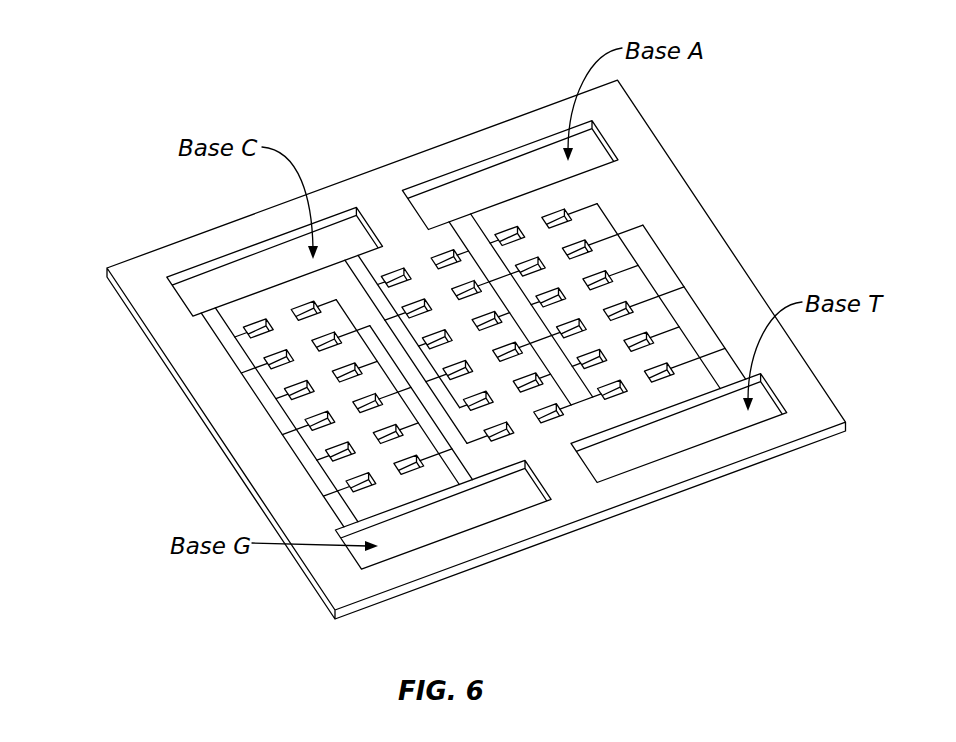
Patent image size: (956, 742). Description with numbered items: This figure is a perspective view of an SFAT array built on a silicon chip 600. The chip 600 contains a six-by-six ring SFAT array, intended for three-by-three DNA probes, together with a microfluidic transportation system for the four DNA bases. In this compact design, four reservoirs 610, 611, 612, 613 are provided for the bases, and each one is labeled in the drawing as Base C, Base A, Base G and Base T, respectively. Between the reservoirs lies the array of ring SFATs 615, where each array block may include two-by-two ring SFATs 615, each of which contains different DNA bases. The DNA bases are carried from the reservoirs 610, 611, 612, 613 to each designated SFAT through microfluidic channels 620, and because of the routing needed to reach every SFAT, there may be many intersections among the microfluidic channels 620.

The silicon chip 600 is at (140, 143).
The reservoir 610 is at (258, 268).
The reservoir 611 is at (472, 190).
The reservoir 612 is at (452, 514).
The reservoir 613 is at (680, 432).
The ring SFATs 615 is at (328, 430).
The microfluidic channels 620 is at (667, 258).